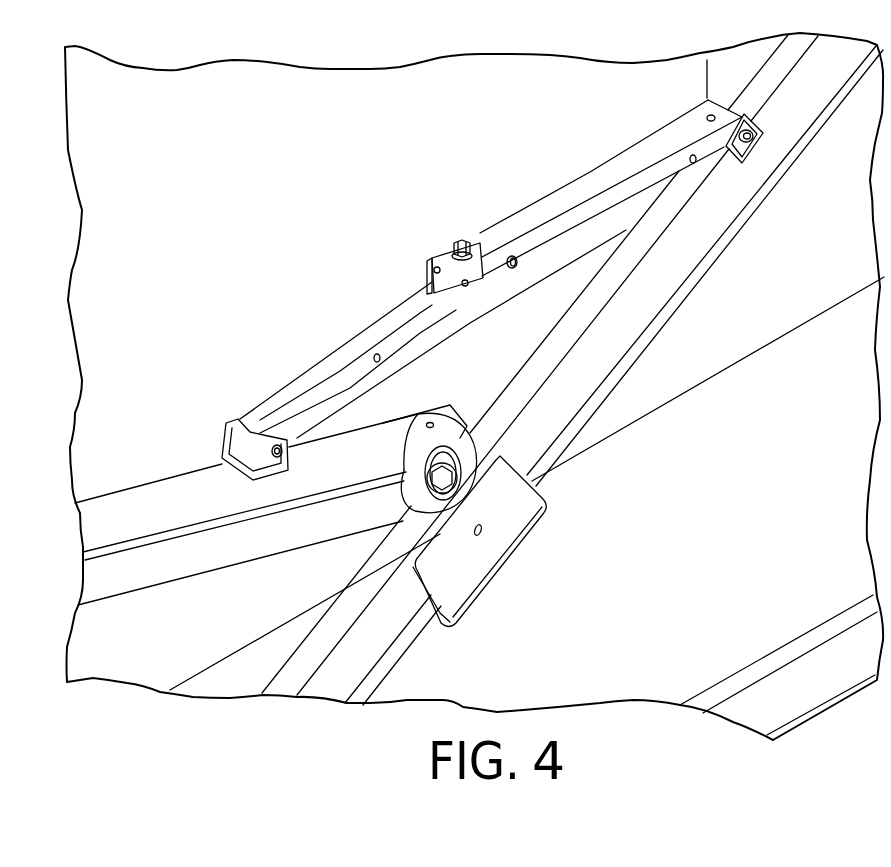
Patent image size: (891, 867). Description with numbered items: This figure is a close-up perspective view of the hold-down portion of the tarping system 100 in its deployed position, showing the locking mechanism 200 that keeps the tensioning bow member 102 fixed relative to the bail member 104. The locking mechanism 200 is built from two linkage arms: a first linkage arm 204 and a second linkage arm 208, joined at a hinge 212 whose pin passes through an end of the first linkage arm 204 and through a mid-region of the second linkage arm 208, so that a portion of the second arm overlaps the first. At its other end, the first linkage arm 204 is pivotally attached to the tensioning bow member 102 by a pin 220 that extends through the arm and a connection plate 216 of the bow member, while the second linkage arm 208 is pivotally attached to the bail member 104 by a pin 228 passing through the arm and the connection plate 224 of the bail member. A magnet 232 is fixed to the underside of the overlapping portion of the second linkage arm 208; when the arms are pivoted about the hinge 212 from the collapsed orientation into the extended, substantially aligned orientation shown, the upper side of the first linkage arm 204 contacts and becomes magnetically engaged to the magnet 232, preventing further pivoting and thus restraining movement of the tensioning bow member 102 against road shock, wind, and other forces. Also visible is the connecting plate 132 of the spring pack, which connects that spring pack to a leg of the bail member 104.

The tarping system 100 is at (600, 744).
The tensioning bow member 102 is at (147, 481).
The bail member 104 is at (678, 313).
The connecting plate 132 is at (490, 563).
The locking mechanism 200 is at (390, 214).
The first linkage arm 204 is at (322, 373).
The second linkage arm 208 is at (555, 190).
The hinge 212 is at (513, 268).
The connection plate 216 is at (233, 471).
The pin 220 is at (278, 458).
The connection plate 224 is at (760, 140).
The pin 228 is at (745, 148).
The magnet 232 is at (445, 272).